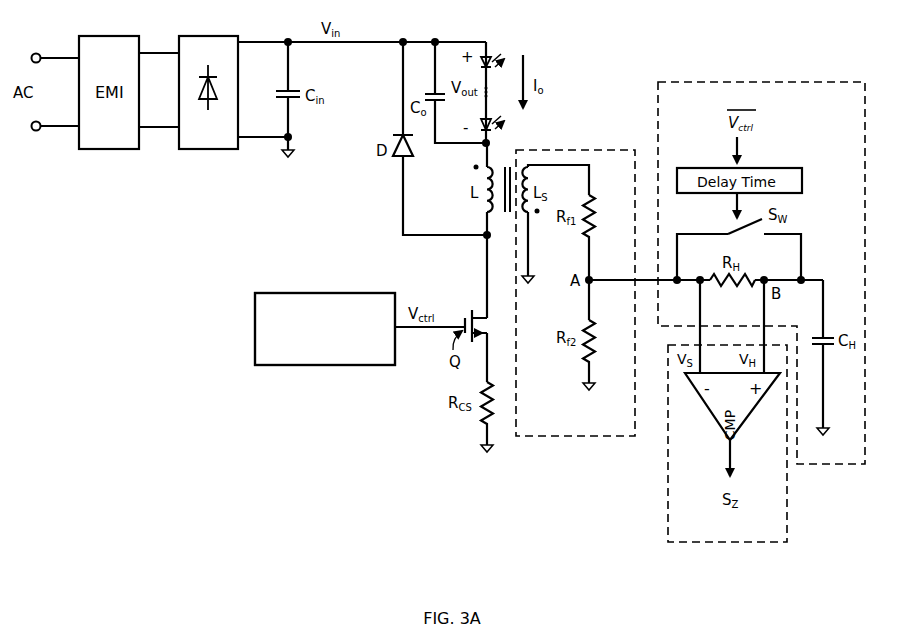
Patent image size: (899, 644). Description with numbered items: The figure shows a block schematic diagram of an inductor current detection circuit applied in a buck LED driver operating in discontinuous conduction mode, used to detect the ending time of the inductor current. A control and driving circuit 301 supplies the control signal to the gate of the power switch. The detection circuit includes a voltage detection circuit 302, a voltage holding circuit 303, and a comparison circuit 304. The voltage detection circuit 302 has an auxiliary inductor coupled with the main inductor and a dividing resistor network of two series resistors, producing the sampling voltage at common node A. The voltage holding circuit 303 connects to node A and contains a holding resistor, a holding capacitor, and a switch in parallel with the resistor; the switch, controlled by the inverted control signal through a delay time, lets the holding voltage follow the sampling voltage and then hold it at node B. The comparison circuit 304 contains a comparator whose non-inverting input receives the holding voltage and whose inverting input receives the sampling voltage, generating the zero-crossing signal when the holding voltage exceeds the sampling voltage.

The control and driving circuit 301 is at (325, 329).
The voltage detection circuit 302 is at (575, 293).
The voltage holding circuit 303 is at (761, 273).
The comparison circuit 304 is at (727, 443).